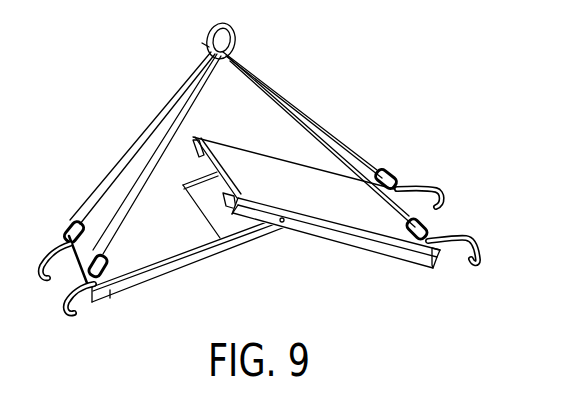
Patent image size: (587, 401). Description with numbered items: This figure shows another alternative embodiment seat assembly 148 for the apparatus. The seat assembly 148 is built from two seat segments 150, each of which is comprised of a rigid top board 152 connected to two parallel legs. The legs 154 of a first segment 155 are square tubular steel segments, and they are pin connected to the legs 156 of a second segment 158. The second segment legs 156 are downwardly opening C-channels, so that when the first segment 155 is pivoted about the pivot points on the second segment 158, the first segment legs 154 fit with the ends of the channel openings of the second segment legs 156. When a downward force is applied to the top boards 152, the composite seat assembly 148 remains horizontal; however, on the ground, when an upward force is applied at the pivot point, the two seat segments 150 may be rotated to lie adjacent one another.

The seat assembly 148 is at (259, 186).
The seat segments 150 is at (266, 218).
The rigid top boards 152 is at (121, 207).
The legs of first segment 154 is at (197, 184).
The first segment 155 is at (106, 298).
The legs of second segment 156 is at (357, 250).
The second segment 158 is at (312, 164).